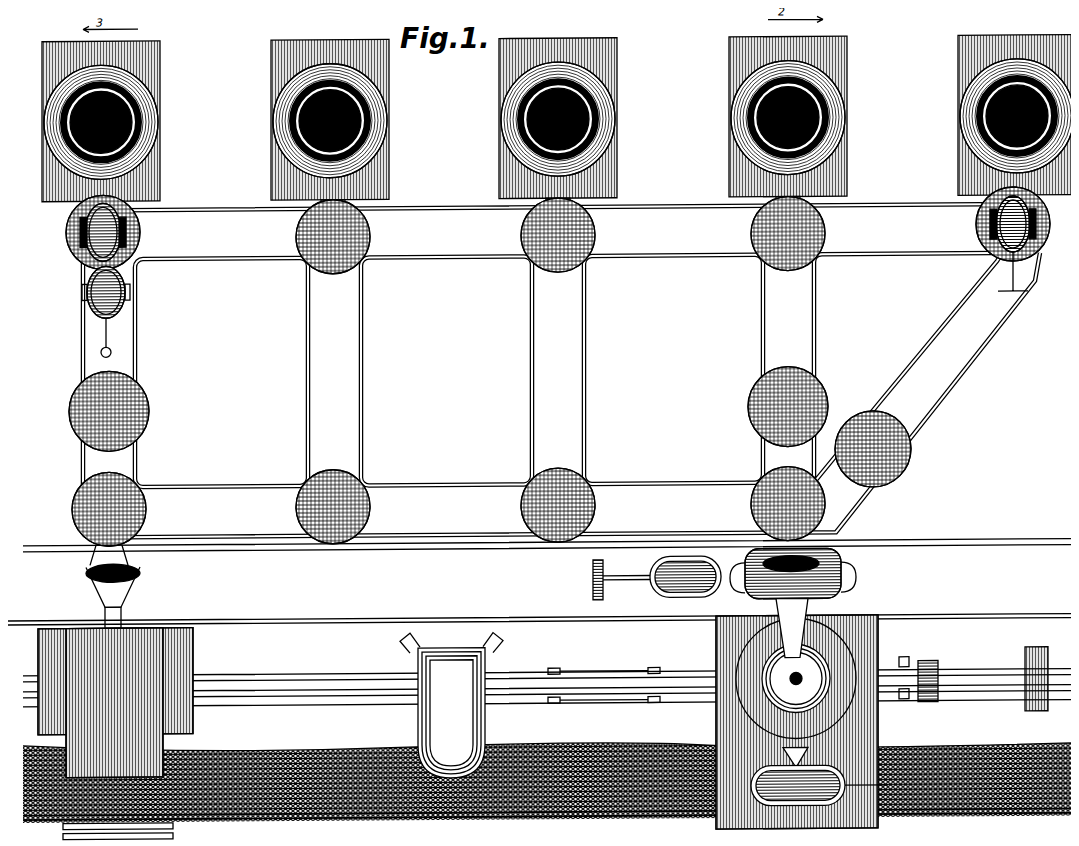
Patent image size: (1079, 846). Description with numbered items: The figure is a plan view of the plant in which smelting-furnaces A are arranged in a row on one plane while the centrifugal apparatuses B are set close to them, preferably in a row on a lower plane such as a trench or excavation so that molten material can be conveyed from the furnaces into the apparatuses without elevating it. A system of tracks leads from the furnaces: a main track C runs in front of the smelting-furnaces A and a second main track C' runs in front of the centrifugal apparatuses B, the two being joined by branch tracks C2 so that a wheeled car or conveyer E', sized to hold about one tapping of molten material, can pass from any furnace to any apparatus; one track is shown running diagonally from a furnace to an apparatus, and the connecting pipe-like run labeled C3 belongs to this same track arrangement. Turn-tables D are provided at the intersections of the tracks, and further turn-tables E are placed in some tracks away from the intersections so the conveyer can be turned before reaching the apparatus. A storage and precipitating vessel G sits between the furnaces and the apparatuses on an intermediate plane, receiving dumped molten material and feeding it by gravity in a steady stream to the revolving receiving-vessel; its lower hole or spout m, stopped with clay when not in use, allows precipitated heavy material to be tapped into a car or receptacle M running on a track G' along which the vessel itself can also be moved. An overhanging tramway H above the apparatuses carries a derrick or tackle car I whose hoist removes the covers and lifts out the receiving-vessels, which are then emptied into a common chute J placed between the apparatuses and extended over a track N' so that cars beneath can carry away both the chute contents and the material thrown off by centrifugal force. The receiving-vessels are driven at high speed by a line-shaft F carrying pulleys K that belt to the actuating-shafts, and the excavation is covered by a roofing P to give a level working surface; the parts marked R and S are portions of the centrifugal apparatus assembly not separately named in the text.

The smelting-furnaces A is at (150, 116).
The centrifugal apparatuses B is at (458, 724).
The main track C is at (561, 371).
The main track C' is at (419, 499).
The branch tracks C2 is at (558, 374).
The left connecting pipe C3 is at (429, 370).
The turn-tables D is at (72, 236).
The turn-tables E is at (448, 408).
The car or conveyer E' is at (914, 369).
The line-shaft F is at (336, 680).
The storage and precipitating vessel G is at (93, 447).
The track G' is at (871, 602).
The overhanging tramway H is at (256, 697).
The derrick or tackle car I is at (547, 688).
The chute J is at (451, 706).
The pulleys K is at (939, 673).
The car or receptacle M is at (627, 639).
The hole or spout m is at (732, 556).
The track N' is at (950, 709).
The covering or roofing P is at (773, 721).
The receiver R is at (819, 776).
The wheel S is at (796, 678).